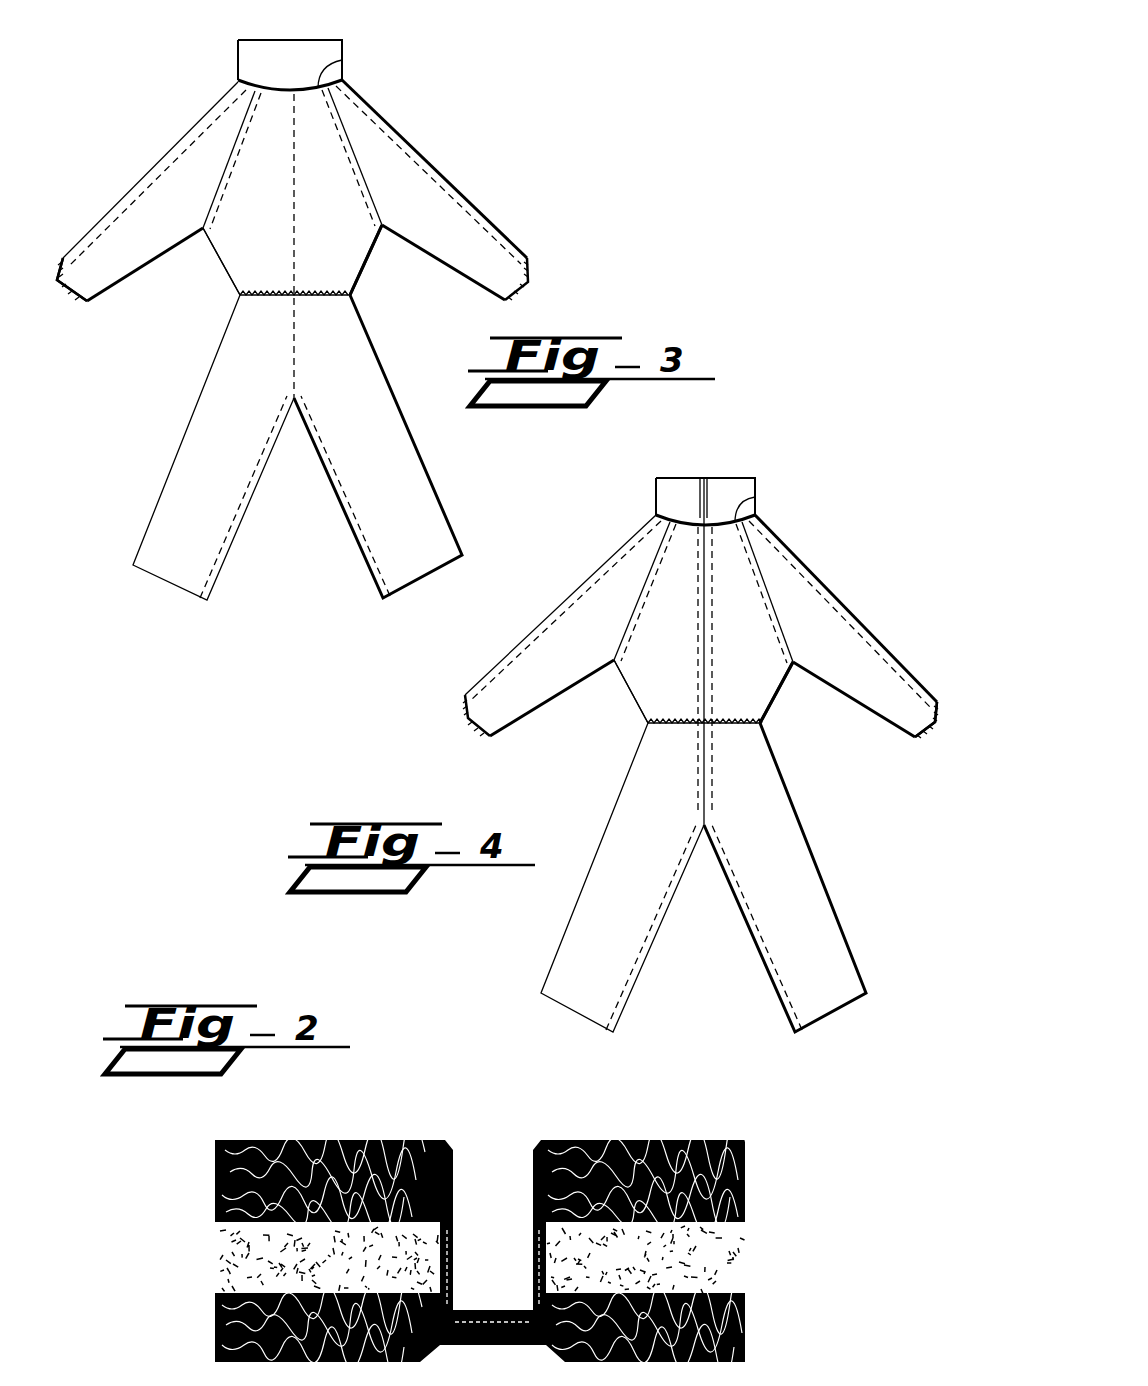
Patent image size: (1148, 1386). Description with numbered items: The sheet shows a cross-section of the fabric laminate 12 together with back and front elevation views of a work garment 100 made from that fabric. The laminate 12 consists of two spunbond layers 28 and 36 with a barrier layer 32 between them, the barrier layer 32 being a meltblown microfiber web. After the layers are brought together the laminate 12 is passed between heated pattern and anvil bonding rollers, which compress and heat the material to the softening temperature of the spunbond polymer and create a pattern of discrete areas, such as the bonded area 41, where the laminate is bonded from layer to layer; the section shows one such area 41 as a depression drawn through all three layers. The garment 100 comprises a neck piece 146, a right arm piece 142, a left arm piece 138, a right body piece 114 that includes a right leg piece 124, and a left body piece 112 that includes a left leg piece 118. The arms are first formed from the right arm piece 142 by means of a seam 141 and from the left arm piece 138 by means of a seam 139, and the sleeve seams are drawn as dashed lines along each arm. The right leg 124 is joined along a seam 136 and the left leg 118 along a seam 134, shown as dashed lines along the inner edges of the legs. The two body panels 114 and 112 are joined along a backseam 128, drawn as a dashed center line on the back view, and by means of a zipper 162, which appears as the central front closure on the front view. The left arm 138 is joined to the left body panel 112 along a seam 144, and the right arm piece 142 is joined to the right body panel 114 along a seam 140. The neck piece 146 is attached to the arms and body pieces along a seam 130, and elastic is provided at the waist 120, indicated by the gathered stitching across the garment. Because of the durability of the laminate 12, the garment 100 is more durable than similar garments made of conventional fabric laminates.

In FIG. 3, the work garment 100 is at (633, 152).
In FIG. 4, the work garment 100 is at (880, 557).
In FIG. 3, the left body piece 112 is at (223, 268).
In FIG. 4, the left body piece 112 is at (775, 706).
In FIG. 3, the right body piece 114 is at (372, 262).
In FIG. 4, the right body piece 114 is at (630, 697).
In FIG. 3, the left leg piece 118 is at (160, 533).
In FIG. 4, the left leg piece 118 is at (830, 950).
In FIG. 3, the waist 120 is at (327, 300).
In FIG. 4, the waist 120 is at (727, 730).
In FIG. 3, the right leg piece 124 is at (427, 513).
In FIG. 4, the right leg piece 124 is at (565, 963).
In FIG. 3, the backseam 128 is at (293, 222).
In FIG. 3, the seam 130 is at (342, 66).
In FIG. 4, the seam 130 is at (757, 497).
In FIG. 3, the seam 134 is at (240, 523).
In FIG. 4, the seam 134 is at (777, 990).
In FIG. 3, the seam 136 is at (367, 543).
In FIG. 4, the seam 136 is at (630, 983).
In FIG. 3, the left arm piece 138 is at (67, 293).
In FIG. 4, the left arm piece 138 is at (932, 728).
In FIG. 3, the seam 139 is at (130, 196).
In FIG. 4, the seam 139 is at (860, 613).
In FIG. 3, the seam 140 is at (357, 178).
In FIG. 4, the seam 140 is at (627, 643).
In FIG. 3, the seam 141 is at (457, 180).
In FIG. 4, the seam 141 is at (530, 638).
In FIG. 3, the right arm piece 142 is at (533, 262).
In FIG. 4, the right arm piece 142 is at (467, 728).
In FIG. 3, the seam 144 is at (225, 198).
In FIG. 4, the seam 144 is at (775, 600).
In FIG. 3, the neck piece 146 is at (345, 56).
In FIG. 4, the neck piece 146 is at (757, 490).
In FIG. 4, the zipper 162 is at (707, 655).
In FIG. 2, the fabric laminate 12 is at (226, 1142).
In FIG. 2, the spunbond layer 28 is at (742, 1322).
In FIG. 2, the barrier layer 32 is at (738, 1258).
In FIG. 2, the spunbond layer 36 is at (737, 1215).
In FIG. 2, the bonded area 41 is at (497, 1207).